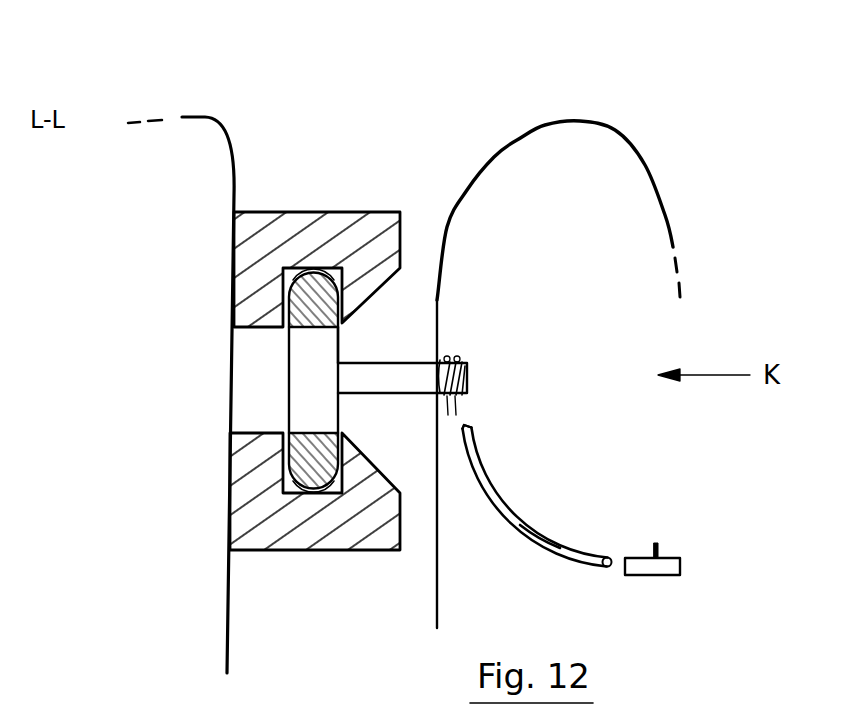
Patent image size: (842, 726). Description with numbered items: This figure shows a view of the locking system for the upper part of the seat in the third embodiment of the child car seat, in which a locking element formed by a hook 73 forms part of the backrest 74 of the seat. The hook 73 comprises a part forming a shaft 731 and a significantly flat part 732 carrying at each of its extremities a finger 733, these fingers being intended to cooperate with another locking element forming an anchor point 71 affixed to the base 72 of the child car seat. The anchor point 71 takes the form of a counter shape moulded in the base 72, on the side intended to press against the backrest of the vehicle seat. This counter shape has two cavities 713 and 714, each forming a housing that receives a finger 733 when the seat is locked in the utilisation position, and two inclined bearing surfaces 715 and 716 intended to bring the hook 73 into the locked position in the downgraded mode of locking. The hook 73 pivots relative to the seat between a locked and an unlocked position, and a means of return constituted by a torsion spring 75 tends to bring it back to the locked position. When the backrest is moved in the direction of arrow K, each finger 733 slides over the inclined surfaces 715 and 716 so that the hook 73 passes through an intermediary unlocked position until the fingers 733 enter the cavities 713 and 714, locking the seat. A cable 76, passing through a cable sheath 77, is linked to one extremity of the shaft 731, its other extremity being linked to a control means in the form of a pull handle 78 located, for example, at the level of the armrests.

The base 72 is at (198, 145).
The anchor point 71 is at (257, 237).
The cavity 713 is at (301, 268).
The cavity 714 is at (333, 488).
The finger 733 is at (330, 265).
The inclined bearing surface 716 is at (345, 407).
The flat part 732 is at (341, 338).
The shaft 731 is at (402, 372).
The inclined bearing surface 715 is at (398, 298).
The backrest 74 is at (610, 182).
The torsion spring 75 is at (458, 403).
The hook 73 is at (440, 463).
The cable 76 is at (462, 425).
The cable sheath 77 is at (537, 517).
The pull handle 78 is at (673, 557).